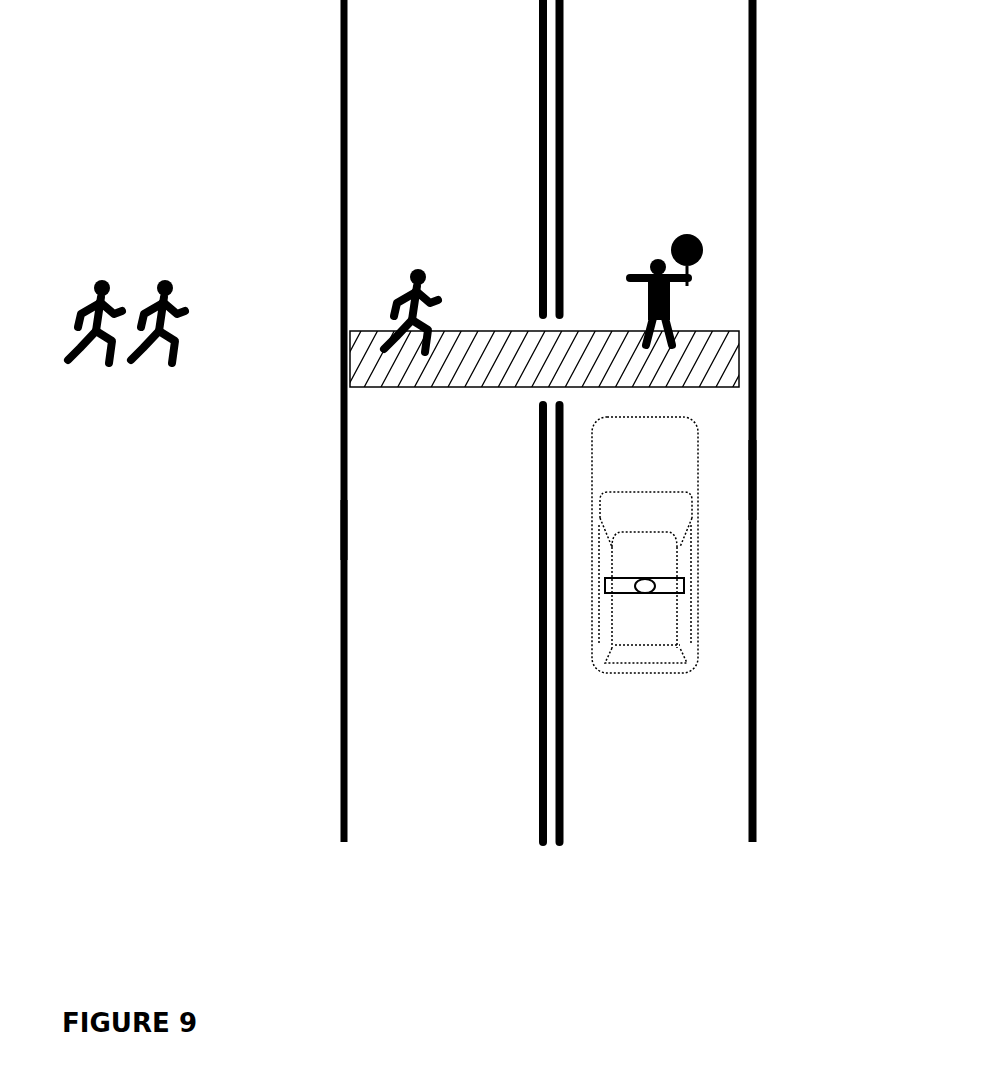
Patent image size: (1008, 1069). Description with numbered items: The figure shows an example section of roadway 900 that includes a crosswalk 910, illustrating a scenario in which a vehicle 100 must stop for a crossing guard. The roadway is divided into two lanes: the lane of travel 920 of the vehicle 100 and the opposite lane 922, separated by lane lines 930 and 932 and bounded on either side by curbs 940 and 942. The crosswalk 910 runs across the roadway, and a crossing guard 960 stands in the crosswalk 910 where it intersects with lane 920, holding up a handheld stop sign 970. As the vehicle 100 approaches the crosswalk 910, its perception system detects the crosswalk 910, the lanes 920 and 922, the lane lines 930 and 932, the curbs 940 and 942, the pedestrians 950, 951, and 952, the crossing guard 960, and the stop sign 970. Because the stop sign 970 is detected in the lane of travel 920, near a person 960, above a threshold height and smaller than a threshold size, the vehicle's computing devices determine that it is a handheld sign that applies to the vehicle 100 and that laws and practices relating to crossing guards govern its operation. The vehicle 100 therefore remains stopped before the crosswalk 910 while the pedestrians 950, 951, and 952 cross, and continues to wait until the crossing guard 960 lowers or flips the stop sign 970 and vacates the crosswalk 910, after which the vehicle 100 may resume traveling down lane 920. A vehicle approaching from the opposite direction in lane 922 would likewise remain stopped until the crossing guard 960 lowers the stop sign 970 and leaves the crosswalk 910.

The vehicle 100 is at (698, 616).
The scene 900 is at (129, 986).
The crosswalk 910 is at (718, 368).
The lane of travel 920 is at (695, 122).
The lane 922 is at (340, 174).
The lane line 930 is at (539, 92).
The lane line 932 is at (539, 565).
The curb 940 is at (757, 475).
The curb 942 is at (340, 530).
The pedestrian 950 is at (410, 275).
The pedestrian 951 is at (172, 283).
The pedestrian 952 is at (96, 283).
The crossing guard 960 is at (690, 318).
The stop sign 970 is at (705, 256).